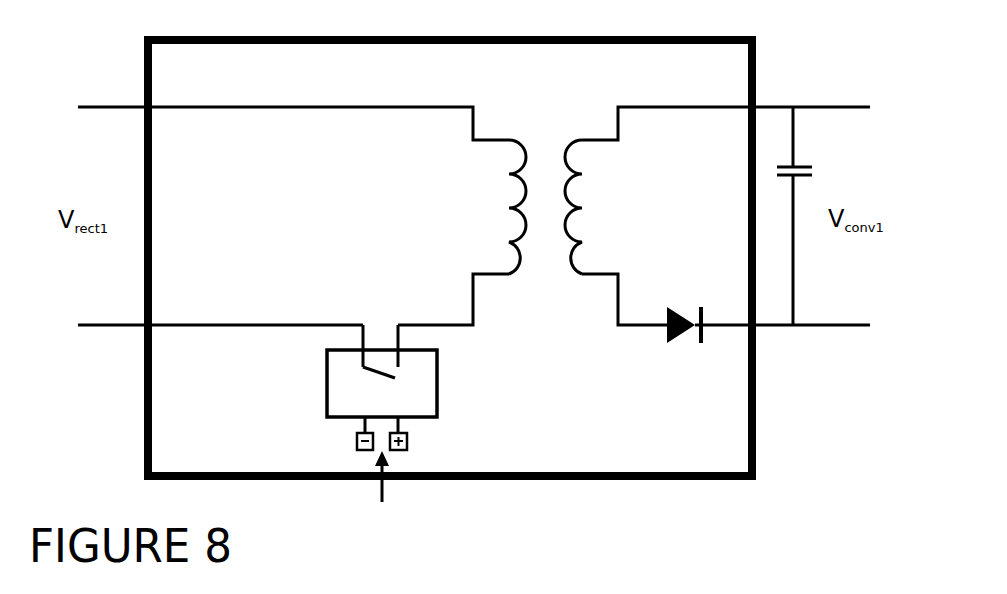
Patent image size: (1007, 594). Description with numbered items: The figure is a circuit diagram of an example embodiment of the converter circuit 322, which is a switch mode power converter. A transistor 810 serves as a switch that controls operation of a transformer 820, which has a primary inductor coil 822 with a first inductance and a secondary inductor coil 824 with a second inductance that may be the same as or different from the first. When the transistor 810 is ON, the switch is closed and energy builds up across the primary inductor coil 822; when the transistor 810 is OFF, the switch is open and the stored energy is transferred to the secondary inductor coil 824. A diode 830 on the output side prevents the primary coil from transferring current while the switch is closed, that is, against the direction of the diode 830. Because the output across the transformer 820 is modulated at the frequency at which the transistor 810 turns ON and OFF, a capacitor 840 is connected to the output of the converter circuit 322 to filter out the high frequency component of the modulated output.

The converter circuit 322 is at (158, 36).
The transistor 810 is at (438, 420).
The transformer 820 is at (518, 218).
The primary inductor coil 822 is at (511, 137).
The secondary inductor coil 824 is at (573, 137).
The diode 830 is at (687, 345).
The capacitor 840 is at (805, 160).